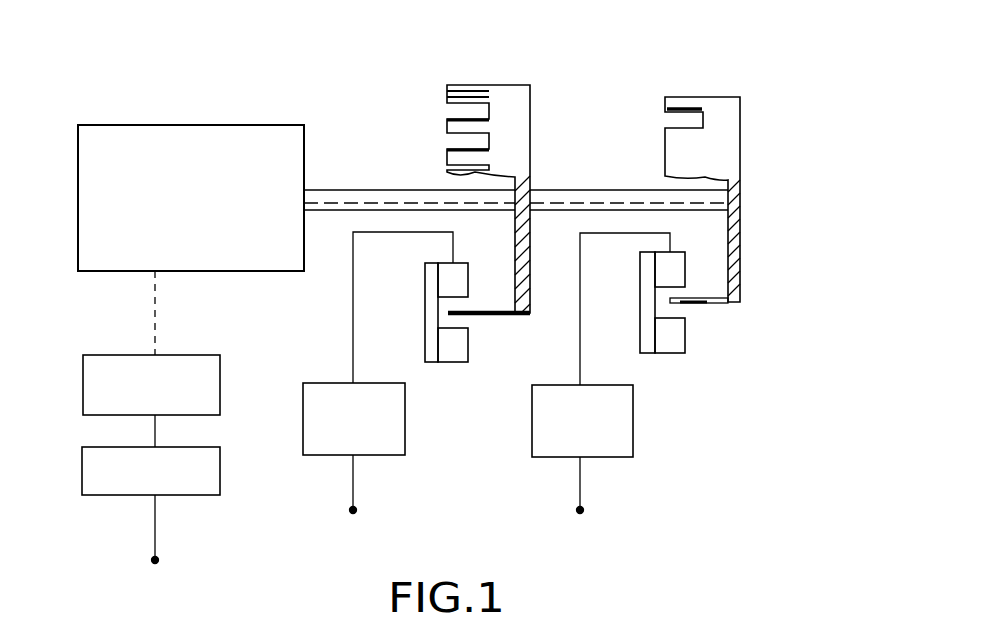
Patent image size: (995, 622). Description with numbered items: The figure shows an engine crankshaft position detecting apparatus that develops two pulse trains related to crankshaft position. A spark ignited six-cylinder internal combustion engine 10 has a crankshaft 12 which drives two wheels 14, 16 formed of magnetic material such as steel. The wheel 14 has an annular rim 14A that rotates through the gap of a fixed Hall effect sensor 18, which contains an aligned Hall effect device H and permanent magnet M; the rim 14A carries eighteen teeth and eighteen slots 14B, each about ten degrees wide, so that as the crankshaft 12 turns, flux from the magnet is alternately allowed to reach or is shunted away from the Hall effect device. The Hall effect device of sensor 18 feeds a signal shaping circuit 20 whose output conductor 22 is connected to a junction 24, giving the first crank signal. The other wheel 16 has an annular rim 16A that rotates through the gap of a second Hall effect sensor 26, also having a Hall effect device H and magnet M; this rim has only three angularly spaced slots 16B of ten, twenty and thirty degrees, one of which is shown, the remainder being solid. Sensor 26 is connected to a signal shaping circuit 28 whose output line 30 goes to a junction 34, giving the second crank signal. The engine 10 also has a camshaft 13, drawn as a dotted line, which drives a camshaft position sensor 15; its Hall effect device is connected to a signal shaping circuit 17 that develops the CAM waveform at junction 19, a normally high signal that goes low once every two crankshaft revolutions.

The internal combustion engine 10 is at (170, 126).
The crankshaft 12 is at (407, 193).
The camshaft 13 is at (155, 327).
The wheel 14 is at (508, 85).
The annular rim 14A is at (468, 315).
The slots 14B is at (474, 100).
The camshaft position sensor 15 is at (88, 405).
The wheel 16 is at (713, 97).
The annular rim 16A is at (685, 305).
The slots 16B is at (688, 117).
The signal shaping circuit 17 is at (83, 490).
The Hall effect sensor 18 is at (445, 363).
The junction 19 is at (152, 562).
The signal shaping circuit 20 is at (303, 420).
The output conductor 22 is at (354, 483).
The junction 24 is at (350, 510).
The Hall effect sensor 26 is at (670, 353).
The signal shaping circuit 28 is at (633, 427).
The line 30 is at (582, 485).
The junction 34 is at (578, 510).